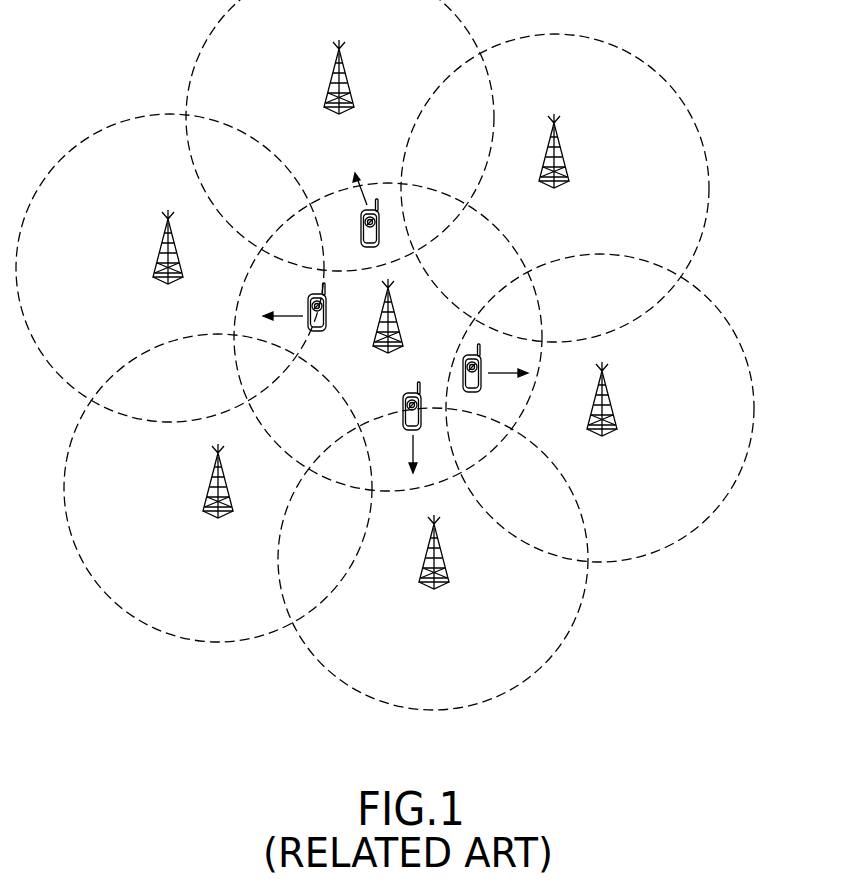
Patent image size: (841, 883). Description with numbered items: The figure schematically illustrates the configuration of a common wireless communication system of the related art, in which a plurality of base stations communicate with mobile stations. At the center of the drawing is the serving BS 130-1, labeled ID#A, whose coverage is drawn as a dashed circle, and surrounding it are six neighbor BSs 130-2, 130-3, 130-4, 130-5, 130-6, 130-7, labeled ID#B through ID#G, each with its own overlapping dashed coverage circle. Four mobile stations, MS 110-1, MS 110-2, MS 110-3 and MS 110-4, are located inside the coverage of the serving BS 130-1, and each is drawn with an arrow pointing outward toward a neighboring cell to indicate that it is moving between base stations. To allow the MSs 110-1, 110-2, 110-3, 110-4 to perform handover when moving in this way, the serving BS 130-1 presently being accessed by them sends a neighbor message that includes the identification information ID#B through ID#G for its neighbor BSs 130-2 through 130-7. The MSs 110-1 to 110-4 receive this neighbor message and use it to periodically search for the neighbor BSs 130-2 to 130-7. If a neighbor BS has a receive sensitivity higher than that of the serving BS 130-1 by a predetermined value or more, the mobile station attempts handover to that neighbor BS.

The serving BS 130-1 is at (402, 311).
The neighbor BS 130-2 is at (353, 80).
The neighbor BS 130-3 is at (567, 155).
The neighbor BS 130-4 is at (616, 410).
The neighbor BS 130-5 is at (448, 563).
The neighbor BS 130-6 is at (198, 485).
The neighbor BS 130-7 is at (148, 255).
The MS 110-1 is at (381, 227).
The MS 110-2 is at (483, 356).
The MS 110-3 is at (424, 406).
The MS 110-4 is at (308, 298).